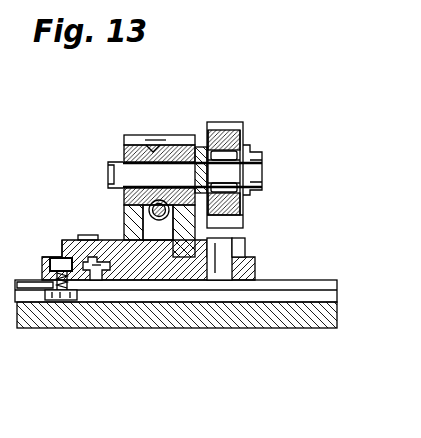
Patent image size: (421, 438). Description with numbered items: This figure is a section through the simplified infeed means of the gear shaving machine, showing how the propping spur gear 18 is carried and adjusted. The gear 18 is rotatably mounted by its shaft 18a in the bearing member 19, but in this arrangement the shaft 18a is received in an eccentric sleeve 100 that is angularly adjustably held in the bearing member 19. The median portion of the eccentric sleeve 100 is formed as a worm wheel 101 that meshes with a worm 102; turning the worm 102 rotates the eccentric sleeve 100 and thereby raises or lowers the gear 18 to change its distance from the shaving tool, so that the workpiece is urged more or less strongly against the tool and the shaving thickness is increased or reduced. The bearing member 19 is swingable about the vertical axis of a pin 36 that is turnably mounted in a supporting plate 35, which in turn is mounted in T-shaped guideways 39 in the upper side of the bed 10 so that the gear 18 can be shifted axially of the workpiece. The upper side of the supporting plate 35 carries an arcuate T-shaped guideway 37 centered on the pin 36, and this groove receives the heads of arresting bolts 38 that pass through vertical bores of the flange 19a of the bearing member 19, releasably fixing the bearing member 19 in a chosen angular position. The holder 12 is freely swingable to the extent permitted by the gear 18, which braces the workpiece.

The bed 10 is at (333, 326).
The holder 12 is at (159, 135).
The spur gear 18 is at (243, 134).
The shaft 18a is at (238, 176).
The bearing member 19 is at (137, 135).
The flange 19a is at (70, 241).
The supporting plate 35 is at (256, 268).
The pin 36 is at (244, 243).
The arcuate T-shaped guideway 37 is at (98, 280).
The arresting bolt 38 is at (88, 234).
The T-shaped guideway 39 is at (293, 297).
The eccentric sleeve 100 is at (108, 152).
The worm wheel 101 is at (152, 146).
The worm 102 is at (159, 216).